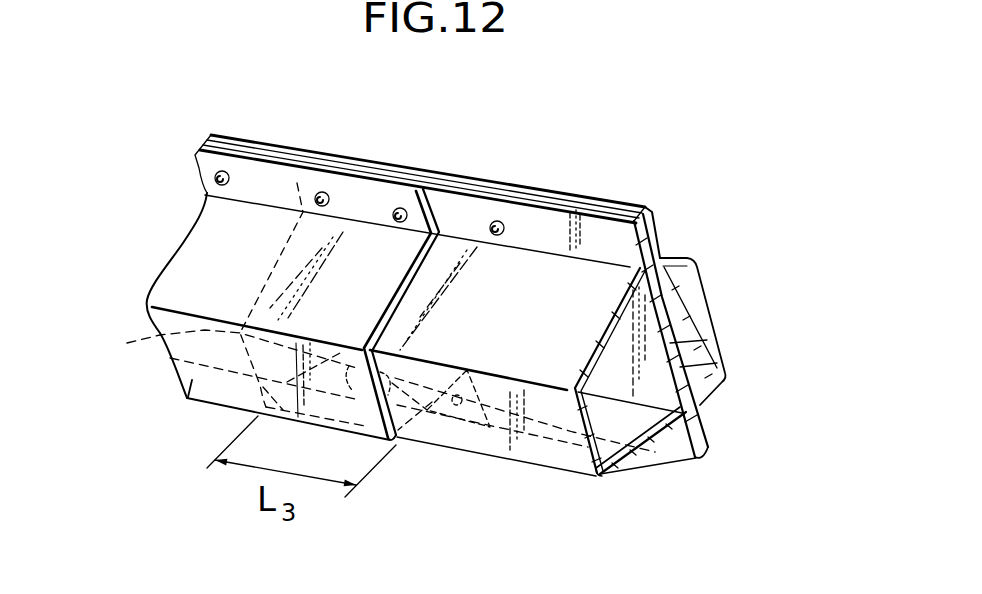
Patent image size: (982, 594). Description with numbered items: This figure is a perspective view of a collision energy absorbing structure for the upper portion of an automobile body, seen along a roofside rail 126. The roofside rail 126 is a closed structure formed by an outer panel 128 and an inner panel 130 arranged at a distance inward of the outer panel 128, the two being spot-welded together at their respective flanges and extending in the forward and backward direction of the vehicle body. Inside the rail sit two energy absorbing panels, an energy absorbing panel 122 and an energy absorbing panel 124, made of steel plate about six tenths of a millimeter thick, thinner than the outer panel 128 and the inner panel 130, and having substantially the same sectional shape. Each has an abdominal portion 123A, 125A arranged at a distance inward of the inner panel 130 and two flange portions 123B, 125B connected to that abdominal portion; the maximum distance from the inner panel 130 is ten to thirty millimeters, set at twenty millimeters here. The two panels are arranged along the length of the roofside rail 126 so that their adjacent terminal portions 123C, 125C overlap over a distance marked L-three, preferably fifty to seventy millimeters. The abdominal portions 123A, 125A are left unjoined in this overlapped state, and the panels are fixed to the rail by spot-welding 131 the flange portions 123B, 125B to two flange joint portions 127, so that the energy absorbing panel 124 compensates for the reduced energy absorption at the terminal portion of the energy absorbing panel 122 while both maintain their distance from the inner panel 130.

The energy absorbing panel 122 is at (218, 233).
The abdominal portion 123A is at (187, 400).
The flange portions 123B is at (263, 182).
The terminal portion 123C is at (333, 307).
The energy absorbing panel 124 is at (600, 288).
The abdominal portion 125A is at (541, 450).
The flange portions 125B is at (569, 212).
The terminal portion 125C is at (351, 385).
The roofside rail 126 is at (722, 307).
The flange joint portions 127 is at (646, 236).
The outer panel 128 is at (703, 280).
The inner panel 130 is at (680, 343).
The spot-welding 131 is at (492, 224).